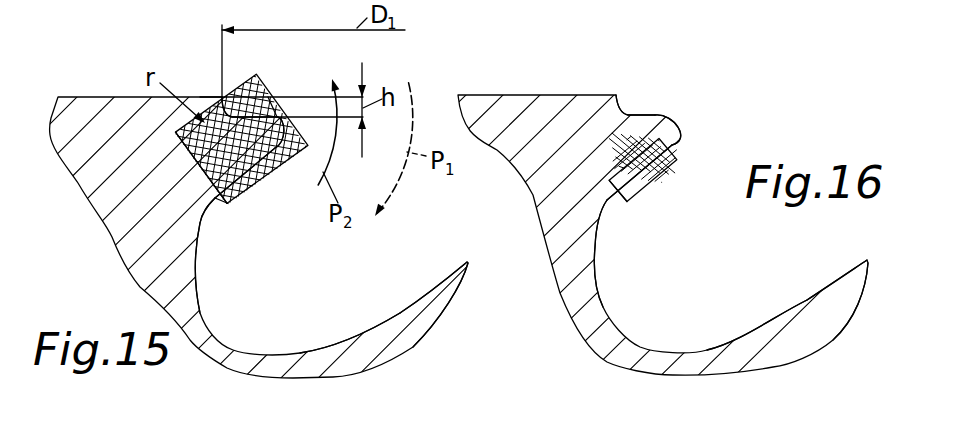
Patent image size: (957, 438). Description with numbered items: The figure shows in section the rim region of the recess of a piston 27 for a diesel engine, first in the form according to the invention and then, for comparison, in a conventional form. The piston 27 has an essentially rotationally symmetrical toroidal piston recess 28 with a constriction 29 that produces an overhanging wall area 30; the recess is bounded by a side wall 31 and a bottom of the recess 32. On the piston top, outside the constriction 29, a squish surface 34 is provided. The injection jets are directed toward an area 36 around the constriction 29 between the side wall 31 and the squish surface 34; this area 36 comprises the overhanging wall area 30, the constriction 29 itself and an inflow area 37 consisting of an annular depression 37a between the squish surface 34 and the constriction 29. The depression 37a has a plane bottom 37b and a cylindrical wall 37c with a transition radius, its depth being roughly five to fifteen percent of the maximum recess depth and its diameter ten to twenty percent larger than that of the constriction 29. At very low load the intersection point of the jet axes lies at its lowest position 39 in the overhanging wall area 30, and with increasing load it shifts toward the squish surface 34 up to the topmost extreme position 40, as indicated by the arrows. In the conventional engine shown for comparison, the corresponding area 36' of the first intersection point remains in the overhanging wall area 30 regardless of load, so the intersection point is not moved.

In FIG. 15, the piston 27 is at (433, 323).
In FIG. 16, the piston 27 is at (830, 323).
In FIG. 15, the piston recess 28 is at (409, 300).
In FIG. 16, the piston recess 28 is at (809, 298).
In FIG. 15, the constriction 29 is at (279, 110).
In FIG. 16, the constriction 29 is at (668, 123).
In FIG. 15, the overhanging wall area 30 is at (257, 188).
In FIG. 16, the overhanging wall area 30 is at (648, 181).
In FIG. 15, the side wall 31 is at (201, 288).
In FIG. 16, the side wall 31 is at (600, 287).
In FIG. 15, the bottom of the recess 32 is at (335, 345).
In FIG. 16, the bottom of the recess 32 is at (737, 340).
In FIG. 15, the squish surface 34 is at (100, 97).
In FIG. 16, the squish surface 34 is at (565, 95).
In FIG. 15, the area 36 is at (280, 138).
In FIG. 16, the area 36' is at (687, 161).
In FIG. 15, the inflow area 37 is at (247, 100).
In FIG. 16, the inflow area 37 is at (643, 105).
In FIG. 15, the annular depression 37a is at (262, 119).
In FIG. 16, the annular depression 37a is at (602, 162).
In FIG. 15, the plane bottom 37b is at (273, 97).
In FIG. 15, the cylindrical wall 37c is at (220, 96).
In FIG. 15, the lowest intersection point 39 is at (228, 204).
In FIG. 15, the topmost extreme position 40 is at (222, 96).